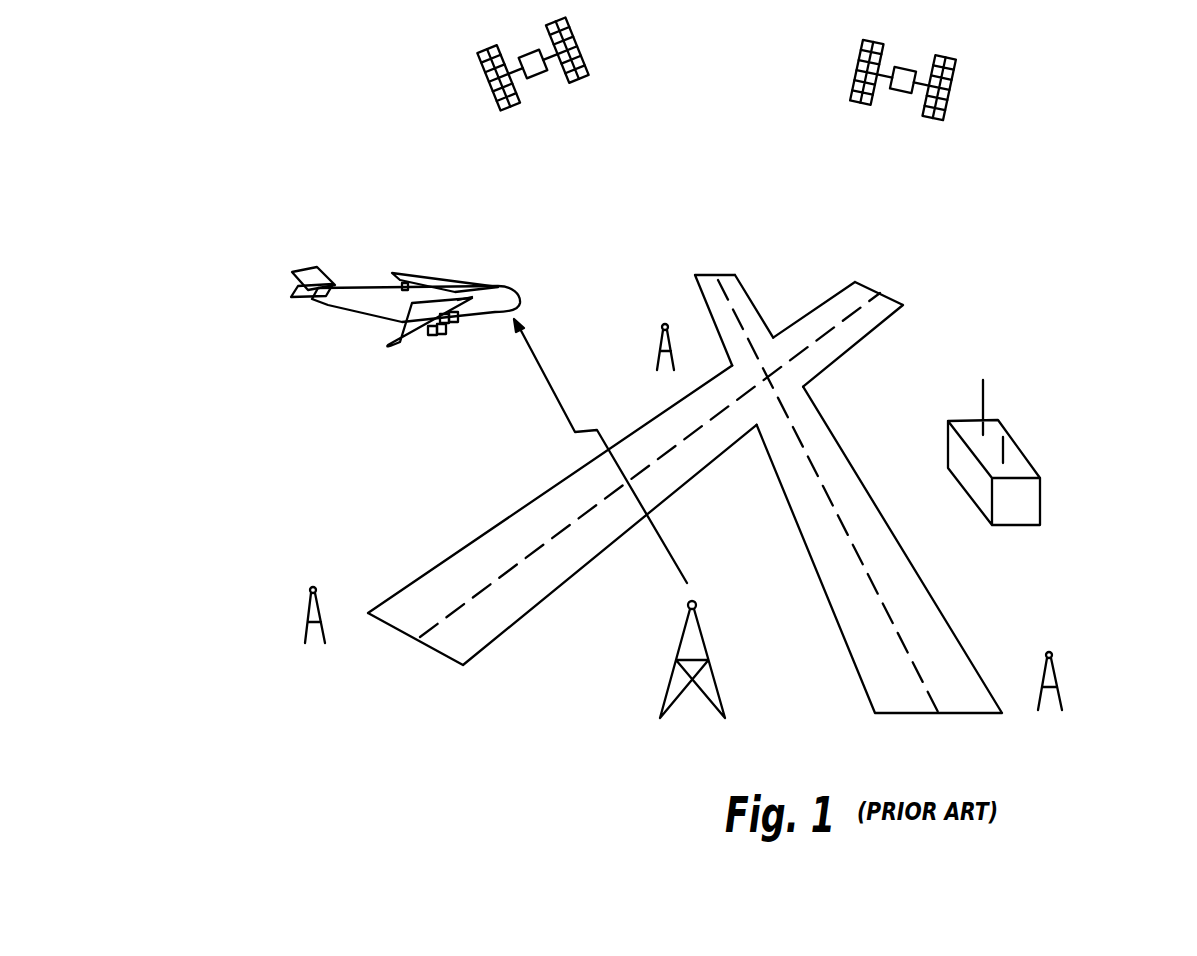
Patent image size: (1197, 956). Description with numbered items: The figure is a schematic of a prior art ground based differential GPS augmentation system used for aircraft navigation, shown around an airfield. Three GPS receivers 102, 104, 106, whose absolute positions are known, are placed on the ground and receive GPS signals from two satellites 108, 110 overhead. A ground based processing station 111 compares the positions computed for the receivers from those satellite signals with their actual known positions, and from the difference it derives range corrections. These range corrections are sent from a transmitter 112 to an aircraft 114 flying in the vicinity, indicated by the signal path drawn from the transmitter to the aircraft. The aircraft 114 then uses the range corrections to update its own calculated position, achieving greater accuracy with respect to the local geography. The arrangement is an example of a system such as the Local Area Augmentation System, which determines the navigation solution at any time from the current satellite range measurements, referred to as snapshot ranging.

The GPS receiver 102 is at (662, 338).
The GPS receiver 104 is at (308, 603).
The GPS receiver 106 is at (1052, 665).
The satellite 108 is at (950, 108).
The satellite 110 is at (478, 72).
The ground based processing station 111 is at (1040, 482).
The transmitter 112 is at (672, 678).
The aircraft 114 is at (322, 298).